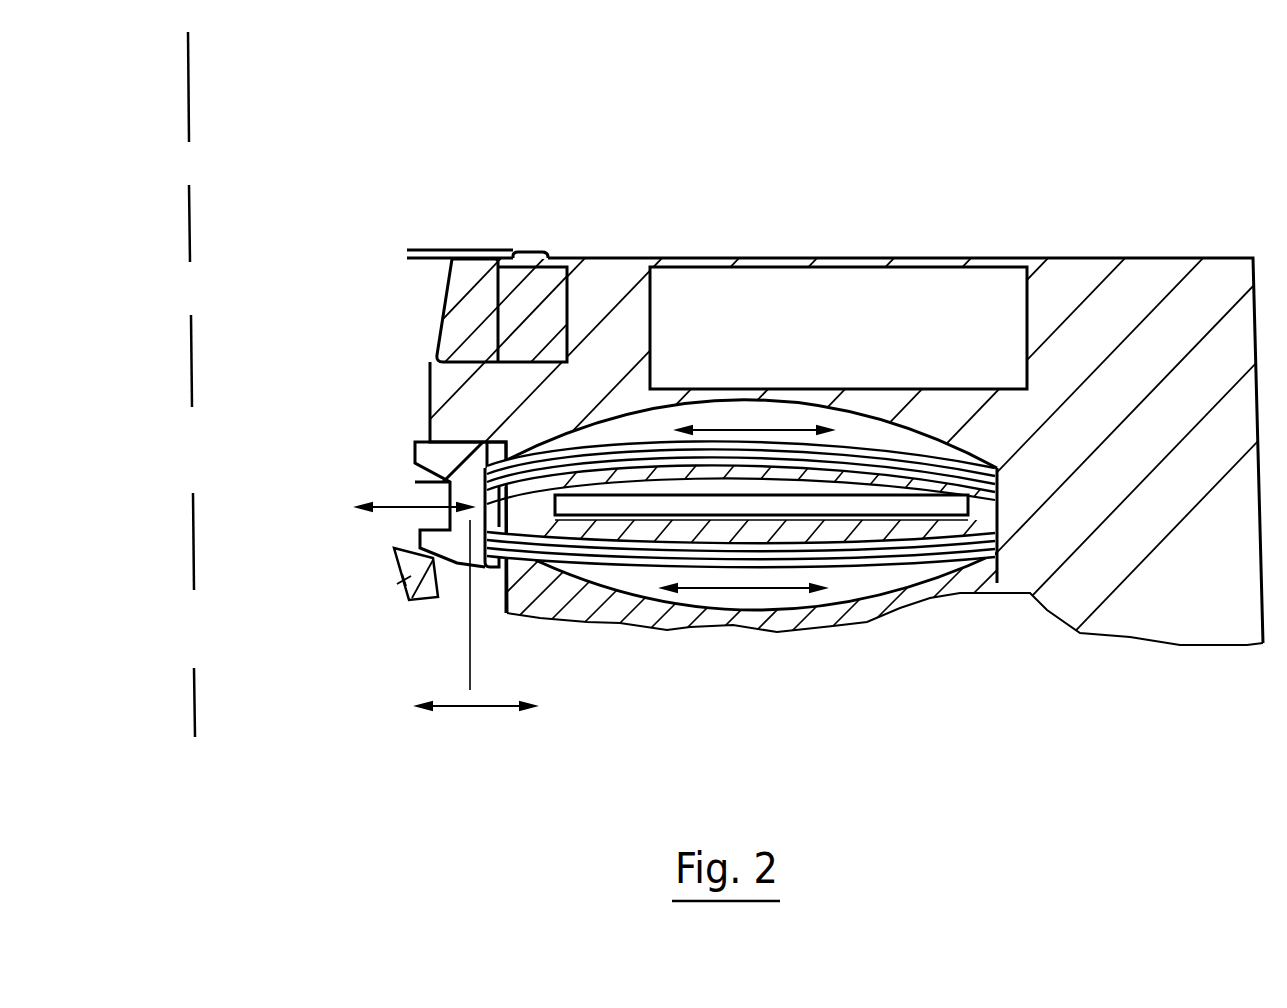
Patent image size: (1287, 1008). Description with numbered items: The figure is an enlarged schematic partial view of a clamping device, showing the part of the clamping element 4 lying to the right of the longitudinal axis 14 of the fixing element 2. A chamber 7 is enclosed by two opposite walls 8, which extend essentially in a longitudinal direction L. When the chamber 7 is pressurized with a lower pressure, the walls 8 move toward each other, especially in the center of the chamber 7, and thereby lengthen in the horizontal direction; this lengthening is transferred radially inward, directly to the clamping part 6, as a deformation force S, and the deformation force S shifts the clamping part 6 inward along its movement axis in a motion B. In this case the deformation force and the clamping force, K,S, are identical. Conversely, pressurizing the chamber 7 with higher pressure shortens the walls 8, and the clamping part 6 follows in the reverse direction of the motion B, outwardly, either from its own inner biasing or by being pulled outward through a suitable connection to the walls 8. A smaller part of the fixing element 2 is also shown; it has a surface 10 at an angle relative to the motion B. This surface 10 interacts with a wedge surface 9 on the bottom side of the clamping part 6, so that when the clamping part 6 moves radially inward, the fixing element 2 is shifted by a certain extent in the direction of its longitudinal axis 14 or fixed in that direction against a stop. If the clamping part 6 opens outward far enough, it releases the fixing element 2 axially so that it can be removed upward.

The fixing element 2 is at (400, 582).
The clamping element 4 is at (913, 540).
The clamping part 6 is at (440, 458).
The chamber 7 is at (847, 510).
The walls 8 is at (901, 462).
The wedge surface 9 is at (437, 598).
The surface 10 is at (403, 547).
The longitudinal axis 14 is at (190, 125).
The longitudinal direction L is at (734, 410).
The motion B is at (476, 639).
The clamping force and deformation force K,S is at (392, 505).